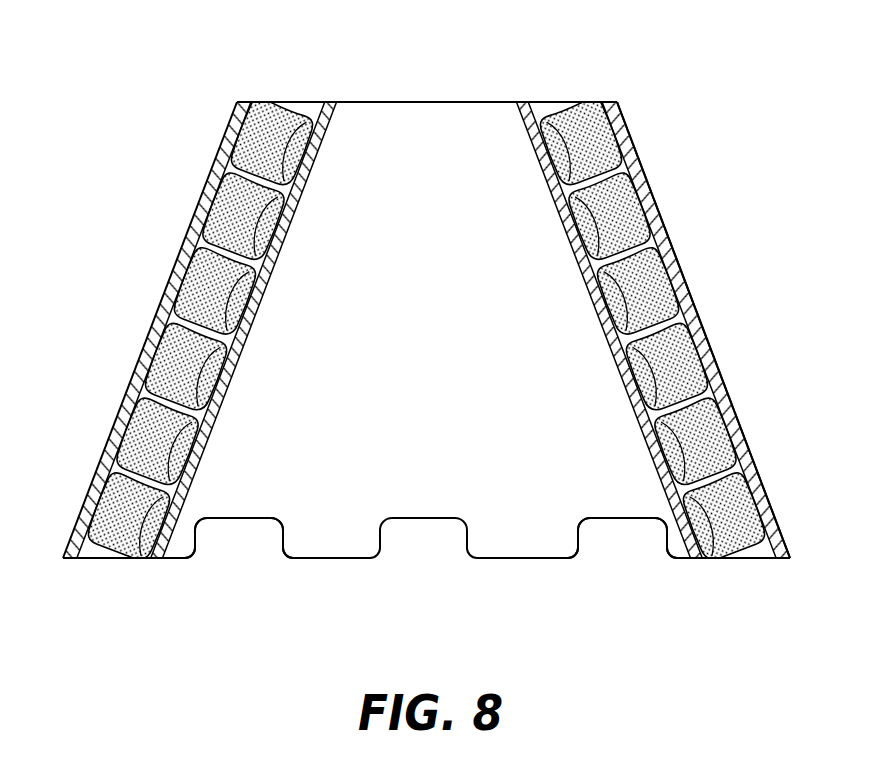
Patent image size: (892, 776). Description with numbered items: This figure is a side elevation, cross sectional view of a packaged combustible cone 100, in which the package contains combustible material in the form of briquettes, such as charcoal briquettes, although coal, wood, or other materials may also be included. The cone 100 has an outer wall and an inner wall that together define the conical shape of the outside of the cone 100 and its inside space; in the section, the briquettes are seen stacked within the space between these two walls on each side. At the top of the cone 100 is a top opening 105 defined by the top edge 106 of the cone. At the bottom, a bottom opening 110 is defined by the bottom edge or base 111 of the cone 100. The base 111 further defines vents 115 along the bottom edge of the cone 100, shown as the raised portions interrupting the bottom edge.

The combustible cone 100 is at (426, 336).
The top opening 105 is at (418, 133).
The top edge 106 is at (357, 101).
The bottom opening 110 is at (521, 538).
The bottom edge or base 111 is at (322, 560).
The vents 115 is at (242, 533).